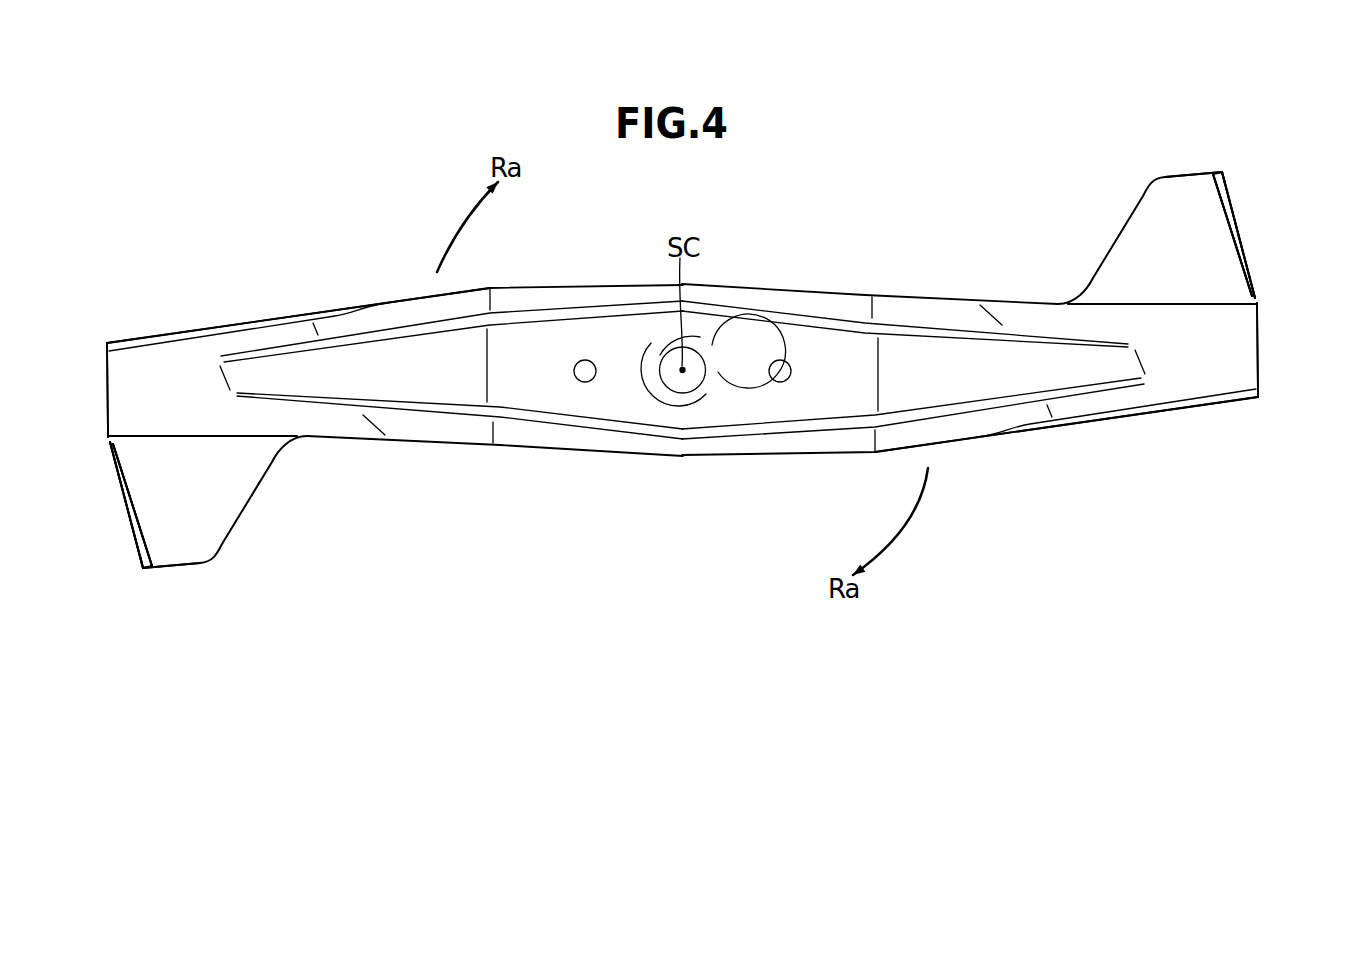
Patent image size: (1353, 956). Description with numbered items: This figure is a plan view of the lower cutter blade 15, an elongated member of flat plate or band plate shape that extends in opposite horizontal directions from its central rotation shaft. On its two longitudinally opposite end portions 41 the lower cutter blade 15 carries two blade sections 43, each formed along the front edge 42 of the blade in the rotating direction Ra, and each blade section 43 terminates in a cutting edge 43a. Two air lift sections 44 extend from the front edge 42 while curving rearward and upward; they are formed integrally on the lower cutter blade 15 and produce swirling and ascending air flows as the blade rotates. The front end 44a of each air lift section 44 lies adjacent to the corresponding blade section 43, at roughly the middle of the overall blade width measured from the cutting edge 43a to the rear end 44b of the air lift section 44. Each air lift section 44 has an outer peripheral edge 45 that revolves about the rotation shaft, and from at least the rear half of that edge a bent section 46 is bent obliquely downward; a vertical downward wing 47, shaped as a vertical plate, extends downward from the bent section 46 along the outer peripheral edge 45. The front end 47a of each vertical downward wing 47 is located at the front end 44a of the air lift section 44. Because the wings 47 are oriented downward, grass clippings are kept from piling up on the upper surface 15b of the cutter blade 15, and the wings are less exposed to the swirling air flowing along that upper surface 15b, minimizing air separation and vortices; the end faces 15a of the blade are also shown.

The lower cutter blade 15 is at (222, 168).
The blade end face 15a is at (107, 387).
The upper surface 15b is at (1168, 363).
The longitudinally opposite end portions 41 is at (203, 377).
The front edge 42 is at (371, 301).
The blade section 43 is at (162, 340).
The cutting edge 43a is at (118, 340).
The air lift section 44 is at (187, 550).
The front end 44a is at (110, 438).
The rear end 44b is at (160, 568).
The outer peripheral edge 45 is at (130, 533).
The bent section 46 is at (138, 565).
The vertical downward wing 47 is at (118, 505).
The front end 47a is at (685, 392).